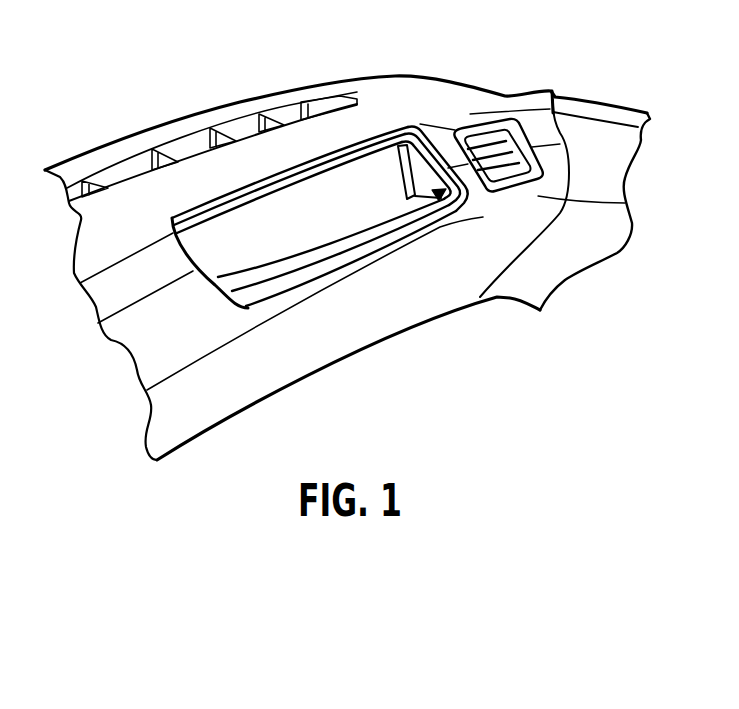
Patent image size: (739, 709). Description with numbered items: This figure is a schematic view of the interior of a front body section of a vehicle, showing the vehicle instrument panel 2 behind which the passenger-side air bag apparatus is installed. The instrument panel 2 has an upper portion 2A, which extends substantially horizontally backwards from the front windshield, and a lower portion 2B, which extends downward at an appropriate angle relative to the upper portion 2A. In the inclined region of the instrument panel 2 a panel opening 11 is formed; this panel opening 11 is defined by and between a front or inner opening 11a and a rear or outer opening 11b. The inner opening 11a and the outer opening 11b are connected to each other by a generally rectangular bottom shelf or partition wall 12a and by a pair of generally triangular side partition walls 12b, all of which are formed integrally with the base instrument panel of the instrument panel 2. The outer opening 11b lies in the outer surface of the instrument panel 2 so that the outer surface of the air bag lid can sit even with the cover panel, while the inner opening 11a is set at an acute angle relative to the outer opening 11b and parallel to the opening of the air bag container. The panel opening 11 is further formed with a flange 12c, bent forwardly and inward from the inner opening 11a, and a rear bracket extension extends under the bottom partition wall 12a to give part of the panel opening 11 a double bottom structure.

The instrument panel 2 is at (366, 374).
The upper portion 2A is at (158, 228).
The lower portion 2B is at (263, 377).
The panel opening 11 is at (377, 170).
The inner opening 11a is at (404, 158).
The outer opening 11b is at (446, 193).
The bottom partition wall 12a is at (333, 241).
The side partition walls 12b is at (431, 208).
The flange 12c is at (287, 243).